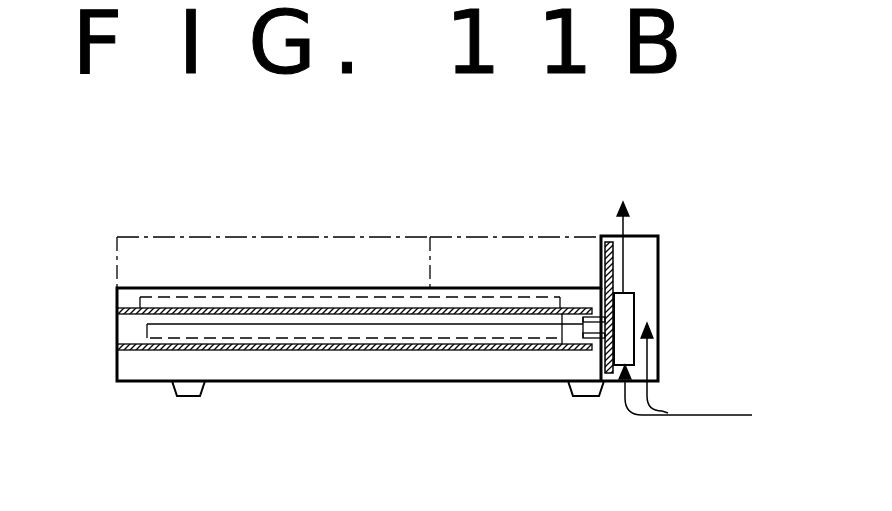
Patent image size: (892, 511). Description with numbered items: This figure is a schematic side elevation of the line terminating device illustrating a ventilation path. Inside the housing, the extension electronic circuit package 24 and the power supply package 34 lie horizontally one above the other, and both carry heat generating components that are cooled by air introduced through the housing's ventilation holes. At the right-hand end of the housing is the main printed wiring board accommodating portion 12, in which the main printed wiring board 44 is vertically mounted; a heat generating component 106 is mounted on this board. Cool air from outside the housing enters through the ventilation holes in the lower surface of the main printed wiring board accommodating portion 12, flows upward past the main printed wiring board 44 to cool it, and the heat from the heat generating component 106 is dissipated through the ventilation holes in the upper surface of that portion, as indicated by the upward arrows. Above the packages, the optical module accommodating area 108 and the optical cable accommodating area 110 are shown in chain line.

The main printed wiring board accommodating portion 12 is at (640, 236).
The extension electronic circuit package 24 is at (140, 338).
The power supply package 34 is at (402, 332).
The main printed wiring board 44 is at (612, 240).
The heat generating component 106 is at (634, 296).
The optical module accommodating area 108 is at (470, 245).
The optical cable accommodating area 110 is at (250, 245).